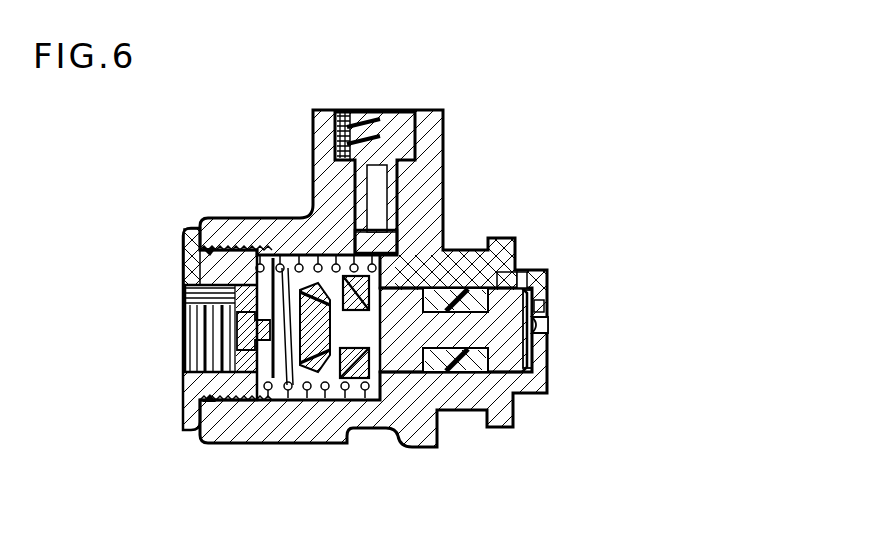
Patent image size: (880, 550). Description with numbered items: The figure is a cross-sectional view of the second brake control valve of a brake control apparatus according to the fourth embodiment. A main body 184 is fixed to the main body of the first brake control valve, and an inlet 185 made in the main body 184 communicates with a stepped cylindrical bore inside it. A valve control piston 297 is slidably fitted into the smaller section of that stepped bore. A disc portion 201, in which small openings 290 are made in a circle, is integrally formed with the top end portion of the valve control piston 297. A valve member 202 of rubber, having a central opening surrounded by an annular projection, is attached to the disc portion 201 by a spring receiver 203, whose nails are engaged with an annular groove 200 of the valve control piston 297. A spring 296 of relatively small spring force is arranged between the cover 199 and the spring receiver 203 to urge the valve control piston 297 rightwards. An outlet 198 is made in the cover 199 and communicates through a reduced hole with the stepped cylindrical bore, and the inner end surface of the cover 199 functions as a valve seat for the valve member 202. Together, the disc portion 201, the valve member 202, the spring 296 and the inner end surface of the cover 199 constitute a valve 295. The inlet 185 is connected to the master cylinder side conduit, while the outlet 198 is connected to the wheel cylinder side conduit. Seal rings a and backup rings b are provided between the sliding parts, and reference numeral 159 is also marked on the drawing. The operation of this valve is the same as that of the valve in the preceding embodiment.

The outlet passage 159 is at (548, 328).
The main body 184 is at (428, 148).
The inlet 185 is at (382, 110).
The outlet 198 is at (182, 310).
The cover 199 is at (202, 258).
The annular groove 200 is at (470, 300).
The disc portion 201 is at (325, 395).
The valve member 202 is at (282, 392).
The spring receiver 203 is at (373, 288).
The small openings 290 is at (310, 266).
The valve 295 is at (297, 330).
The spring 296 is at (280, 250).
The valve control piston 297 is at (507, 337).
The seal rings a is at (193, 268).
The backup rings b is at (505, 262).